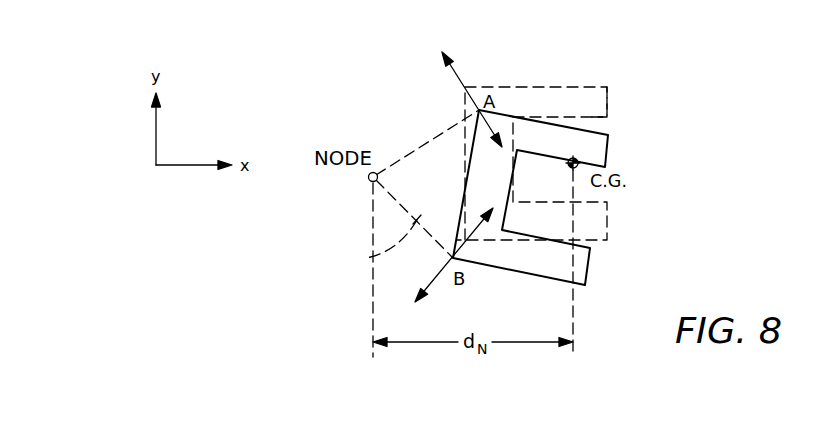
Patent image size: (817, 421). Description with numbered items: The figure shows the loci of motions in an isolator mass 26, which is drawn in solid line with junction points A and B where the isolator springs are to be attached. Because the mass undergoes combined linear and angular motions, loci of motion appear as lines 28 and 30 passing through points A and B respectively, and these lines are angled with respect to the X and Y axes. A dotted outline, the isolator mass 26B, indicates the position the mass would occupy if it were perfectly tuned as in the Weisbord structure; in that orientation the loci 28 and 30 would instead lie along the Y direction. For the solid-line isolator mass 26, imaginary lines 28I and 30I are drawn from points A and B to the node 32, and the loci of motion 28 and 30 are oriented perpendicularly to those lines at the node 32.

The isolator mass 26 is at (572, 68).
The dotted isolator mass 26B is at (609, 112).
The locus of motion line 28 is at (460, 82).
The imaginary line 28I is at (413, 148).
The locus of motion line 30 is at (440, 271).
The imaginary line 30I is at (366, 257).
The node 32 is at (368, 182).